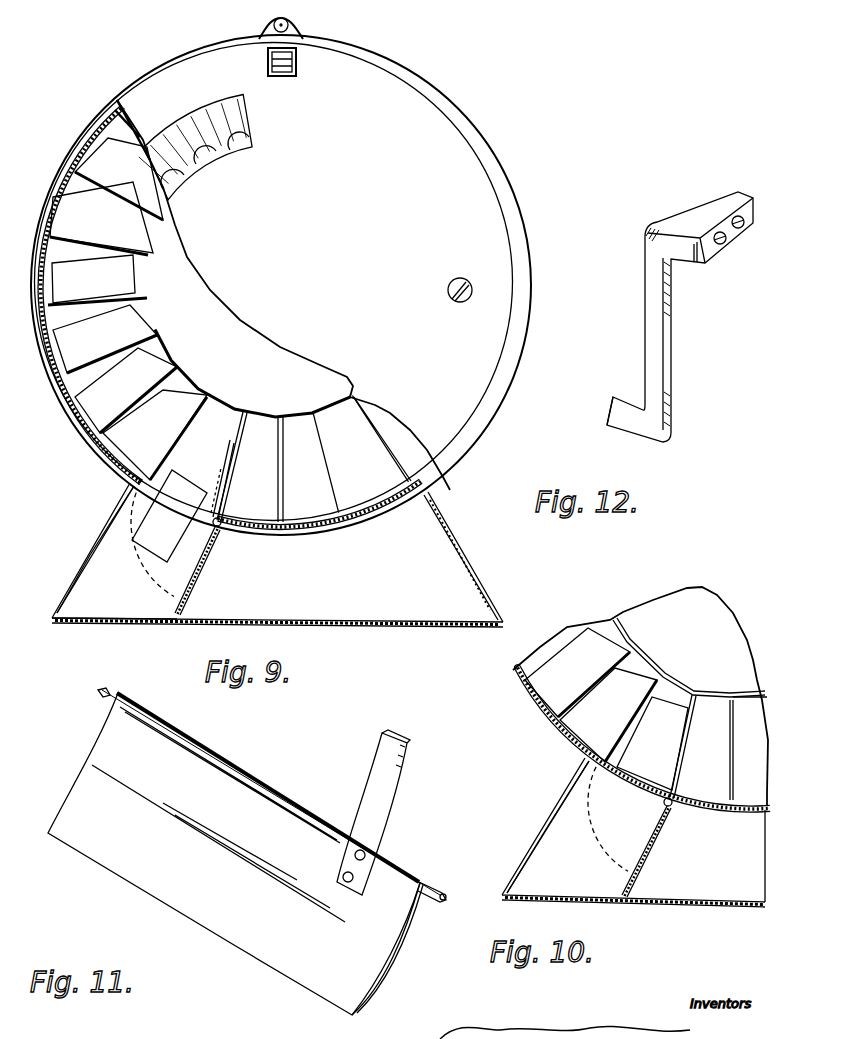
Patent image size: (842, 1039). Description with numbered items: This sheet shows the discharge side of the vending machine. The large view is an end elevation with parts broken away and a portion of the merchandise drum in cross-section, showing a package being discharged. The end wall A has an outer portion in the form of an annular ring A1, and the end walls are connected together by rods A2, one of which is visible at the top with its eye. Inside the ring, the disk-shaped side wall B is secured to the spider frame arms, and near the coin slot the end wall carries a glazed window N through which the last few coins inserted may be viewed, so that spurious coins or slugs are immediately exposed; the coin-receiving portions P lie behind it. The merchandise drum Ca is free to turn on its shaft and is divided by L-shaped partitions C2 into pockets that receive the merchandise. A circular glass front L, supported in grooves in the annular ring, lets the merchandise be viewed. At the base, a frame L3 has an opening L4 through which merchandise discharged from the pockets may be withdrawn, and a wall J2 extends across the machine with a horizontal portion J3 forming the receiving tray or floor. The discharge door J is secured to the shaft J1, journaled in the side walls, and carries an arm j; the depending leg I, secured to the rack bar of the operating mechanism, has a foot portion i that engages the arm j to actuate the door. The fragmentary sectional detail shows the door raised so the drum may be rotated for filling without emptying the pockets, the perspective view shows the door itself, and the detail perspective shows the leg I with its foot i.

In FIG. 9, the end wall A is at (277, 555).
In FIG. 10, the end wall A is at (633, 832).
In FIG. 9, the annular ring A1 is at (505, 368).
In FIG. 9, the rod A2 is at (289, 23).
In FIG. 9, the disk-shaped side wall B is at (294, 295).
In FIG. 10, the disk-shaped side wall B is at (640, 696).
In FIG. 9, the glazed window N is at (207, 110).
In FIG. 9, the pockets / cups P is at (205, 157).
In FIG. 9, the circular glass front L is at (70, 388).
In FIG. 10, the circular glass front L is at (527, 687).
In FIG. 9, the frame L3 is at (120, 495).
In FIG. 10, the frame L3 is at (578, 769).
In FIG. 9, the opening L4 is at (83, 557).
In FIG. 10, the opening L4 is at (547, 823).
In FIG. 9, the L-shaped partition C2 is at (271, 401).
In FIG. 10, the L-shaped partition C2 is at (663, 675).
In FIG. 9, the merchandise drum Ca is at (314, 459).
In FIG. 10, the merchandise drum Ca is at (718, 747).
In FIG. 9, the discharge door J is at (194, 558).
In FIG. 11, the discharge door J is at (244, 851).
In FIG. 9, the shaft J1 is at (221, 527).
In FIG. 11, the shaft J1 is at (437, 880).
In FIG. 9, the wall J2 is at (182, 594).
In FIG. 9, the horizontal portion J3 is at (130, 618).
In FIG. 9, the arm j is at (218, 497).
In FIG. 11, the arm j is at (383, 792).
In FIG. 12, the depending leg I is at (662, 340).
In FIG. 12, the foot portion i is at (612, 414).